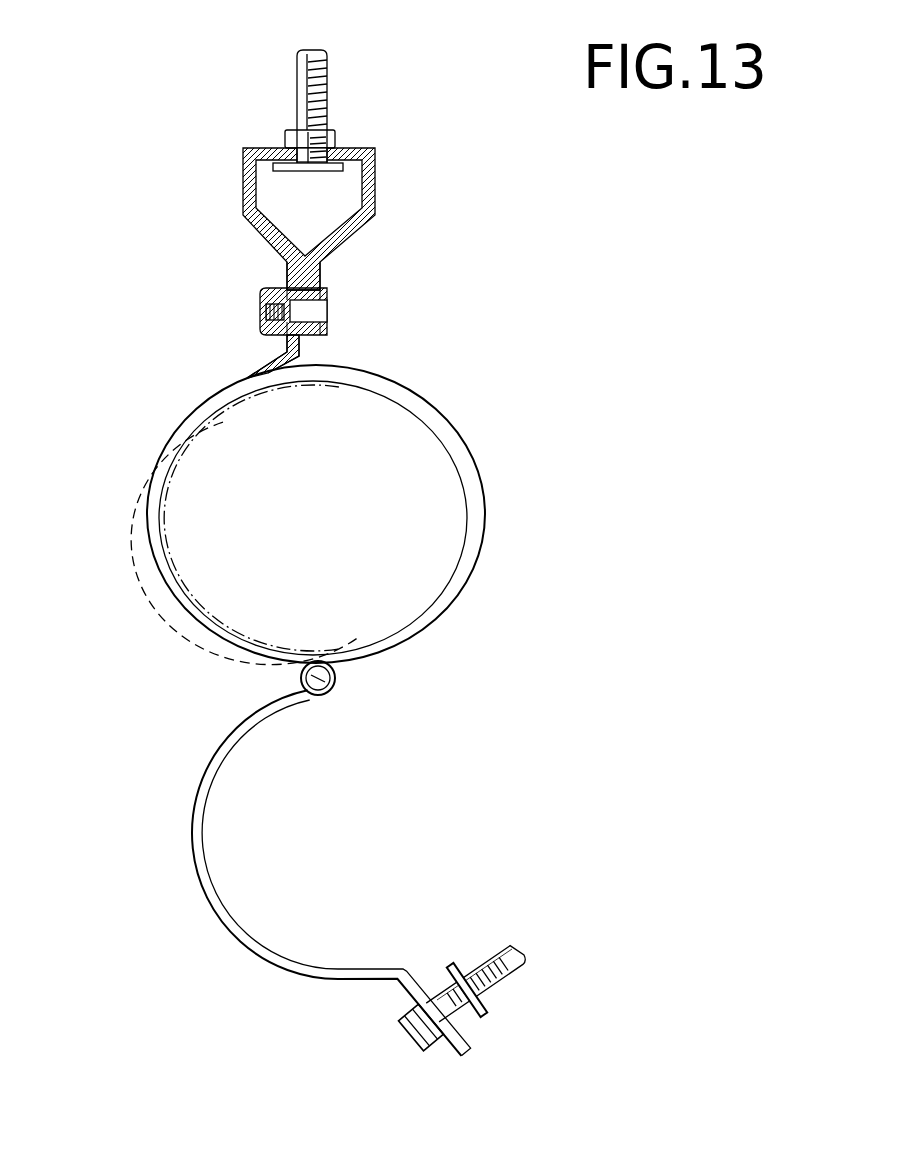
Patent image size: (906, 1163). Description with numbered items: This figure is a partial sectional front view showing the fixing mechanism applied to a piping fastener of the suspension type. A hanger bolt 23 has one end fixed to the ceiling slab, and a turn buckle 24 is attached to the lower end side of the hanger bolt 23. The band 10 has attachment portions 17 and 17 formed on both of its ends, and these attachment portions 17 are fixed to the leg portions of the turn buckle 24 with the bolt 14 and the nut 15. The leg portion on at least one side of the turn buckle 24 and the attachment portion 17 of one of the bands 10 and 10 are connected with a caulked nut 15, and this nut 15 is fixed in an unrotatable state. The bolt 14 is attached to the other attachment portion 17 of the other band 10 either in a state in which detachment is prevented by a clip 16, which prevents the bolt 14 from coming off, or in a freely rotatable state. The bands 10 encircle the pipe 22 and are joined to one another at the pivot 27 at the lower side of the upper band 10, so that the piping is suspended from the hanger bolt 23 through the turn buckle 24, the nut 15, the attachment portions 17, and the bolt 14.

The band 10 is at (155, 561).
The bolt 14 is at (525, 963).
The nut 15 is at (260, 317).
The clip 16 is at (452, 965).
The attachment portion 17 is at (287, 277).
The pipe 22 is at (458, 580).
The hanger bolt 23 is at (327, 102).
The turn buckle 24 is at (377, 197).
The pivot pin 27 is at (333, 685).